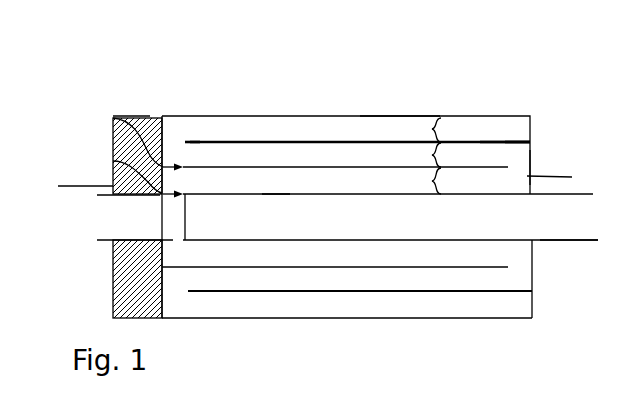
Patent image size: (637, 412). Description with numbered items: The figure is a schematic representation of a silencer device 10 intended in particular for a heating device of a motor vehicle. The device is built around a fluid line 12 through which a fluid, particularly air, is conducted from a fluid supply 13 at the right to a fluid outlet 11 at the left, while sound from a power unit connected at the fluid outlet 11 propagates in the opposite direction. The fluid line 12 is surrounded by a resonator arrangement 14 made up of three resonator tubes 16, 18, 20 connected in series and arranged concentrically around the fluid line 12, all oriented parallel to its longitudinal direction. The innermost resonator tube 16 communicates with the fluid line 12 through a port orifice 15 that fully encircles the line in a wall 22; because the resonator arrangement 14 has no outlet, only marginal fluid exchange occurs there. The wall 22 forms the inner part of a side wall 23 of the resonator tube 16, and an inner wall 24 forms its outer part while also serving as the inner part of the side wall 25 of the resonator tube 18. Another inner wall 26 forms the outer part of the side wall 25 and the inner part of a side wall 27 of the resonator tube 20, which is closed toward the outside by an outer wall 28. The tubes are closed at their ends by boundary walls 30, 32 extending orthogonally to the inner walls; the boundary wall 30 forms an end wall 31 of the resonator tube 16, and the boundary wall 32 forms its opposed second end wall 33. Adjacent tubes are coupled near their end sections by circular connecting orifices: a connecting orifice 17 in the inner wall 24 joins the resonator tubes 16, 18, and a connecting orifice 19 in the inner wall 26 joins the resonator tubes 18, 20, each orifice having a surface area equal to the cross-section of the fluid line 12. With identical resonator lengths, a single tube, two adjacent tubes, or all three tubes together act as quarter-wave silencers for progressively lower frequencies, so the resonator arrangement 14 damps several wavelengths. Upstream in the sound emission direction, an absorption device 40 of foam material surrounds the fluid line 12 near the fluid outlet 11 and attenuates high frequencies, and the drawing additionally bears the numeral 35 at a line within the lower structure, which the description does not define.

The silencer device 10 is at (332, 336).
The fluid outlet 11 is at (134, 217).
The fluid line 12 is at (390, 217).
The fluid supply 13 is at (569, 225).
The resonator arrangement 14 is at (488, 113).
The port orifice 15 is at (71, 183).
The resonator tube 16 is at (378, 186).
The connecting orifice 17 is at (524, 158).
The resonator tube 18 is at (335, 159).
The connecting orifice 19 is at (172, 136).
The resonator tube 20 is at (360, 132).
The wall 22 is at (275, 183).
The side wall 23 is at (420, 181).
The inner wall 24 is at (113, 116).
The side wall 25 is at (420, 155).
The inner wall 26 is at (519, 139).
The side wall 27 is at (420, 130).
The outer wall 28 is at (394, 110).
The boundary wall 30 is at (539, 167).
The end wall 31 is at (564, 178).
The boundary wall 32 is at (150, 118).
The second end wall 33 is at (123, 171).
The lower adhesive layer 35 is at (136, 253).
The absorption device 40 is at (124, 296).